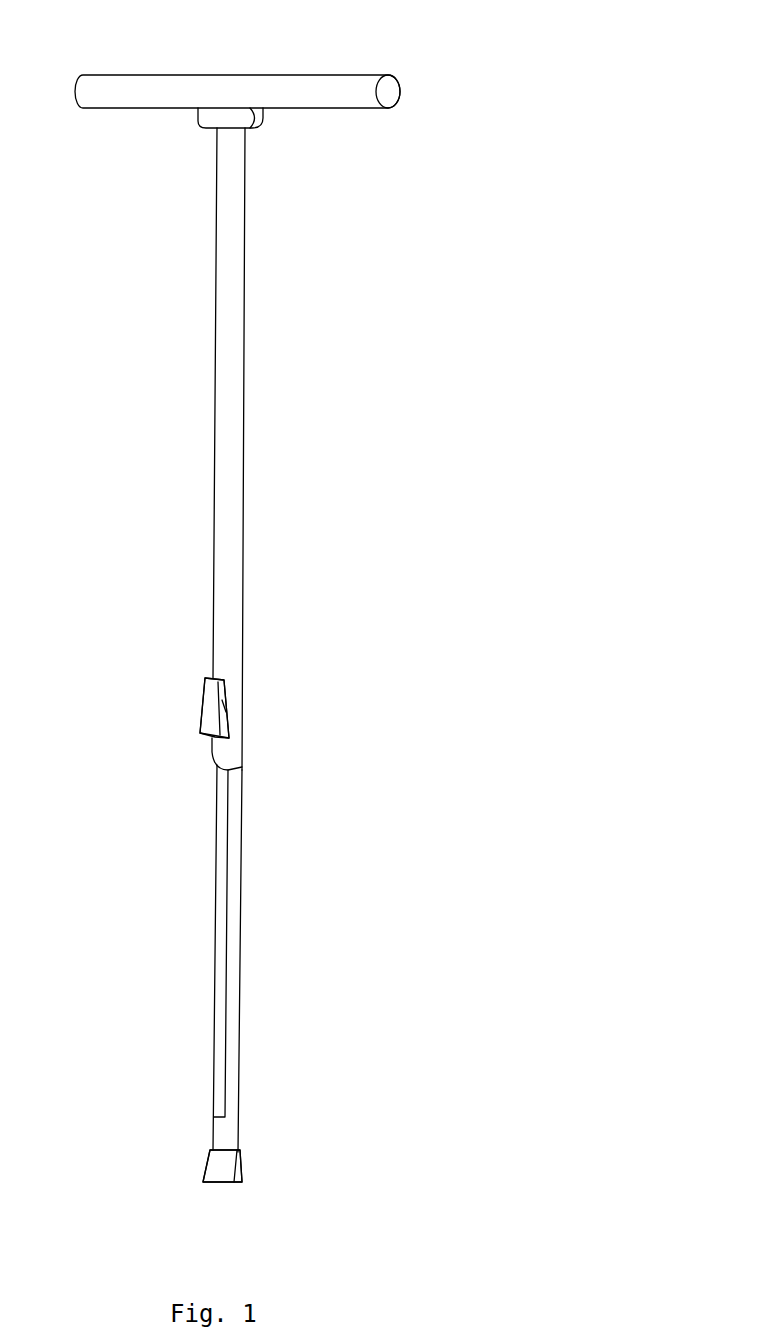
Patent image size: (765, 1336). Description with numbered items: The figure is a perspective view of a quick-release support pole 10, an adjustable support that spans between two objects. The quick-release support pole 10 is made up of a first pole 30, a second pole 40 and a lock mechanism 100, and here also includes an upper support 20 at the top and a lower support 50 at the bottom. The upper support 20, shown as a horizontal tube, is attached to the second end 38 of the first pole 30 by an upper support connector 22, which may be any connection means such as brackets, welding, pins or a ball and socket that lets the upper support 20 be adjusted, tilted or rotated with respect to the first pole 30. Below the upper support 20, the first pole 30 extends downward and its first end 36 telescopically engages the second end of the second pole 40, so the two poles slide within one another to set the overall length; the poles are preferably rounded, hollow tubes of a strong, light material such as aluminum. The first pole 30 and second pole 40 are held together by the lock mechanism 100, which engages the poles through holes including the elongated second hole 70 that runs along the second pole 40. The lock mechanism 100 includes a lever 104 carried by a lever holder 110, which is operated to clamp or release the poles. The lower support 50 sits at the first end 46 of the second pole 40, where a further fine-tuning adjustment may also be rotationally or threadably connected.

The quick-release support pole 10 is at (434, 300).
The upper support 20 is at (338, 87).
The upper support connector 22 is at (205, 118).
The second end of first pole 38 is at (254, 137).
The first pole 30 is at (233, 404).
The first end of first pole 36 is at (249, 757).
The second pole 40 is at (237, 887).
The first end of second pole 46 is at (193, 1168).
The lower support 50 is at (241, 1178).
The second hole 70 is at (217, 902).
The lock mechanism 100 is at (166, 717).
The lever 104 is at (203, 682).
The lever holder 110 is at (228, 712).